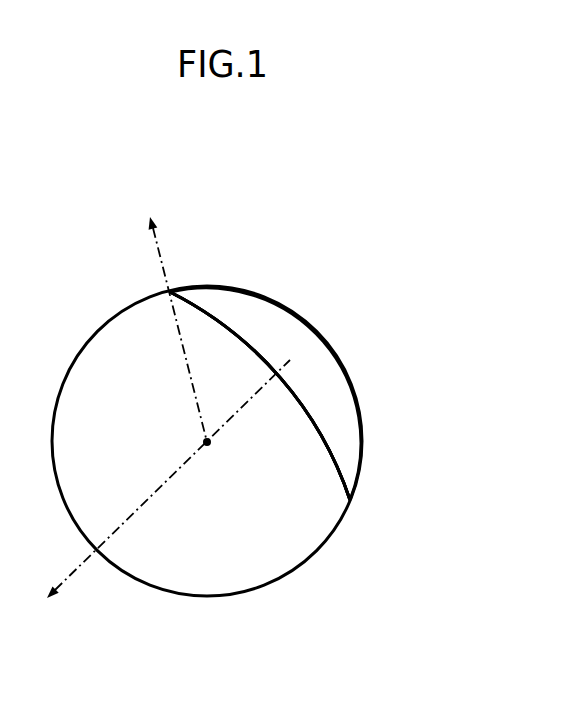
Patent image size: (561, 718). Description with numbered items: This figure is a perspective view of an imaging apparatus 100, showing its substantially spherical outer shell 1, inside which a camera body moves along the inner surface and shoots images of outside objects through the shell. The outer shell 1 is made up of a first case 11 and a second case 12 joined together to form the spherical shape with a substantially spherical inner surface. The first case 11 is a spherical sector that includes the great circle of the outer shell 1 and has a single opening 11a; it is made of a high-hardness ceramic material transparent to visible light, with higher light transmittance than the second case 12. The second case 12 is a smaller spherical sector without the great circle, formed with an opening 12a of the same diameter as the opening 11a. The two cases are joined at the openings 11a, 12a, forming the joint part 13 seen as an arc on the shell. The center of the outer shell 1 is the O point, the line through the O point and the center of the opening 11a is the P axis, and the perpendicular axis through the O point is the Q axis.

The imaging apparatus 100 is at (384, 170).
The outer shell 1 is at (452, 553).
The first case 11 is at (298, 517).
The opening 11a is at (320, 435).
The second case 12 is at (348, 452).
The opening 12a is at (305, 417).
The joint part 13 is at (243, 340).